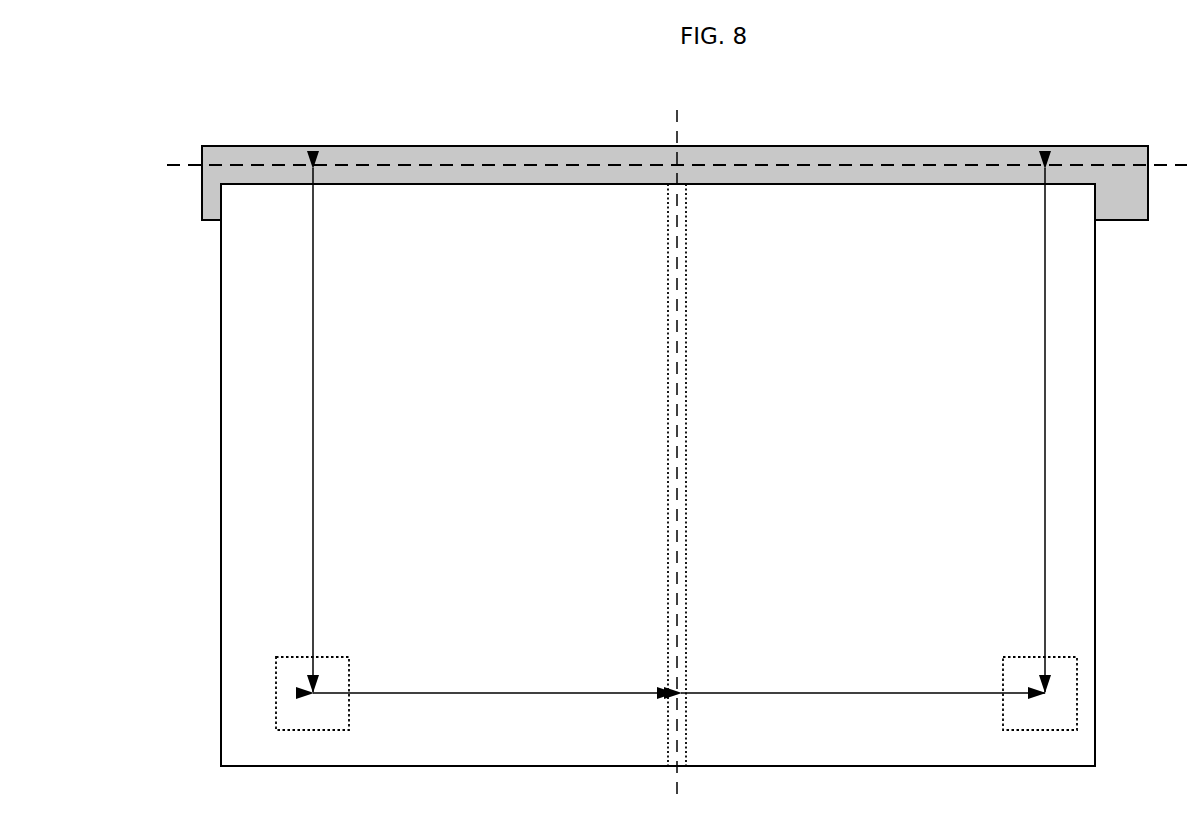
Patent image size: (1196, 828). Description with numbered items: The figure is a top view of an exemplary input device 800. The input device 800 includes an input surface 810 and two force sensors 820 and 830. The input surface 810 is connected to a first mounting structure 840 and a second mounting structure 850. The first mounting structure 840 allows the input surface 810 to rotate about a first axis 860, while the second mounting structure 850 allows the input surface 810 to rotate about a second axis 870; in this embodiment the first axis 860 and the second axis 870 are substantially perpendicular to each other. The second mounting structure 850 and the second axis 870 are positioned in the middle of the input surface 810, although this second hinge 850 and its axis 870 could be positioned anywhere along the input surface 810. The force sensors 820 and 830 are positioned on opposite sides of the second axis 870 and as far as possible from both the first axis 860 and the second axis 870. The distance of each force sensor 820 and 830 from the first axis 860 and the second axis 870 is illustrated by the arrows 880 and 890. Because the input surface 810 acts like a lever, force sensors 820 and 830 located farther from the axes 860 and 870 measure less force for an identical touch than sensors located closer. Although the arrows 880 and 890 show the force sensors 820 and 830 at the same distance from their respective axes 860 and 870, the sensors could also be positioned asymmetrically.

The input device 800 is at (352, 66).
The input surface 810 is at (221, 439).
The force sensor 820 is at (349, 675).
The force sensor 830 is at (1003, 675).
The first mounting structure 840 is at (432, 146).
The second mounting structure 850 is at (686, 338).
The first axis 860 is at (189, 165).
The second axis 870 is at (677, 128).
The arrows 880 is at (313, 412).
The arrows 890 is at (621, 692).